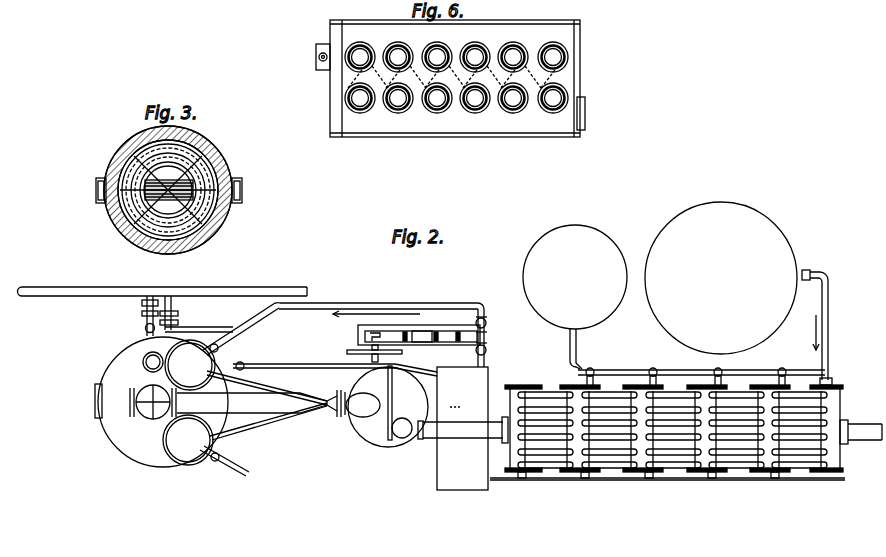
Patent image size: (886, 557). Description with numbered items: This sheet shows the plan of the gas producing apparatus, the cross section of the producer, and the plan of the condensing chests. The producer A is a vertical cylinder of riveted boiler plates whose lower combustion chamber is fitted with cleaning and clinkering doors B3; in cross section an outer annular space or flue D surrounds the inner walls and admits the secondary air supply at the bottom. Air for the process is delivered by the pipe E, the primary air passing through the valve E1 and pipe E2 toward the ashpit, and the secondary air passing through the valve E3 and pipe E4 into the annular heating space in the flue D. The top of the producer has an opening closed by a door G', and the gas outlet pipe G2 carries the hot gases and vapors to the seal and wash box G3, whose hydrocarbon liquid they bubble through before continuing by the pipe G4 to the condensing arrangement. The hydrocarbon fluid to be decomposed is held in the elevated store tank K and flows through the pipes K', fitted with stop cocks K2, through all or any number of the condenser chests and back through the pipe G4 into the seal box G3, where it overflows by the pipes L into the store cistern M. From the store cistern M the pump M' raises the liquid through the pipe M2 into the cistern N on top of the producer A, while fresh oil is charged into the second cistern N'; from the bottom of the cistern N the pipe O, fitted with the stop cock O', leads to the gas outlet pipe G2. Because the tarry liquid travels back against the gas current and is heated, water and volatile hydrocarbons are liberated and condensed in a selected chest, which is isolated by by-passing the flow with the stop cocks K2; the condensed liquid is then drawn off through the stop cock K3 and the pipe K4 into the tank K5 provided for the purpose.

In FIG. 3, the annular space or flue D is at (100, 196).
In FIG. 2, the air pipe E is at (150, 280).
In FIG. 2, the primary air valve E1 is at (172, 310).
In FIG. 2, the primary air pipe E2 is at (176, 320).
In FIG. 2, the secondary air valve E3 is at (141, 306).
In FIG. 2, the secondary air pipe E4 is at (144, 328).
In FIG. 2, the producer A is at (163, 402).
In FIG. 2, the cleaning and clinkering doors B3 is at (84, 401).
In FIG. 2, the cistern N is at (222, 346).
In FIG. 2, the cistern N' is at (206, 445).
In FIG. 2, the pipe O is at (267, 388).
In FIG. 2, the stop cock O' is at (335, 373).
In FIG. 2, the gas outlet pipe G2 is at (252, 403).
In FIG. 2, the door G' is at (268, 421).
In FIG. 2, the seal and wash box G3 is at (377, 415).
In FIG. 2, the pipe G4 is at (463, 430).
In FIG. 2, the overflow pipes L is at (462, 428).
In FIG. 2, the store cistern M is at (685, 432).
In FIG. 2, the pump M' is at (427, 339).
In FIG. 2, the pipe M2 is at (379, 327).
In FIG. 2, the store tank K is at (721, 278).
In FIG. 2, the pipes K' is at (825, 325).
In FIG. 2, the stop cocks K2 is at (833, 381).
In FIG. 2, the stop cock K3 is at (594, 380).
In FIG. 2, the pipe K4 is at (596, 371).
In FIG. 2, the tank K5 is at (575, 297).